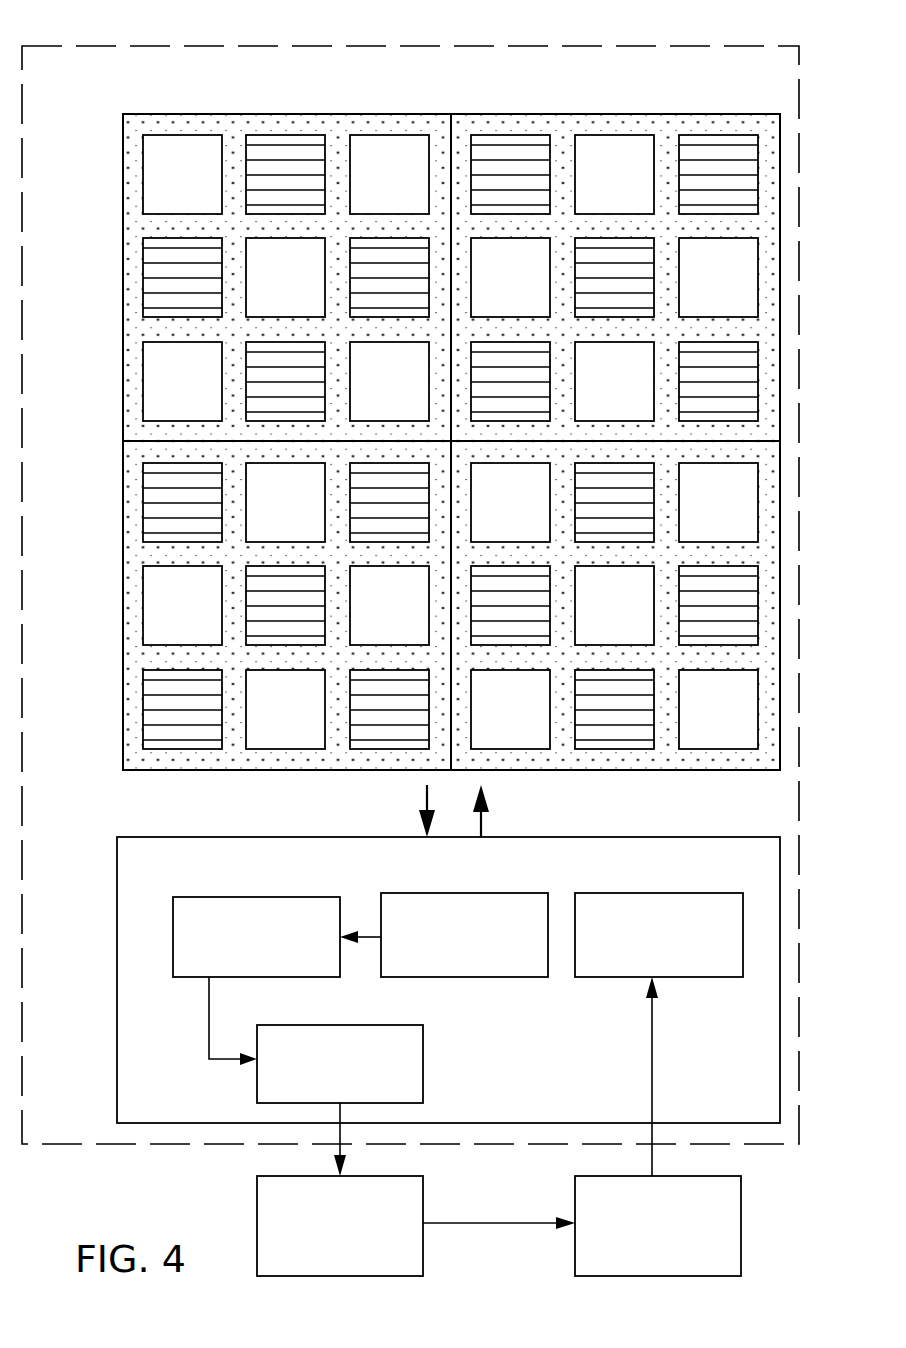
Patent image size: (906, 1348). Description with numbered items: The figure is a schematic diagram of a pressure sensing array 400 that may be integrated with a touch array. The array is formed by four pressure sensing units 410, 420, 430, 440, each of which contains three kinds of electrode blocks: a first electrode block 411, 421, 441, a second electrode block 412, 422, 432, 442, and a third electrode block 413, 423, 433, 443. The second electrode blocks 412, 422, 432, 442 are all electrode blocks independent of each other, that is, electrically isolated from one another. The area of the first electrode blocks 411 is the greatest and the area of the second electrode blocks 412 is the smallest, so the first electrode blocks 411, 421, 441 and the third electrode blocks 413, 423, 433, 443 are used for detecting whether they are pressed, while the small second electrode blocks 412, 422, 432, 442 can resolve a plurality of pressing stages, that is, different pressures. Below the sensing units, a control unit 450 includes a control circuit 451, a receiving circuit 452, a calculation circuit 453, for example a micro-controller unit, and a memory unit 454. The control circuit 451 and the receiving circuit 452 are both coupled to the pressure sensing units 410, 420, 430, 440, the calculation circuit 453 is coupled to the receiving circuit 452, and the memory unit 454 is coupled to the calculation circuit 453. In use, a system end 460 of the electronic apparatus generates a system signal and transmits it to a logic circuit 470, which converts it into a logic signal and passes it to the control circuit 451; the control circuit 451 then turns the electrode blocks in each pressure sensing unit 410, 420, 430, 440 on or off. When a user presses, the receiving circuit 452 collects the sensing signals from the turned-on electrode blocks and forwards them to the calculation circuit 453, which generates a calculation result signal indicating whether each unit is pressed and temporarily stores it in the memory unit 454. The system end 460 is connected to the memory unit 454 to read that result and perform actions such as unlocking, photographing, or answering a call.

The pressure sensing array 400 is at (155, 43).
The pressure sensing unit 410 is at (123, 152).
The first electrode block 411 is at (163, 186).
The second electrode block 412 is at (300, 157).
The third electrode block 413 is at (163, 616).
The pressure sensing unit 420 is at (555, 115).
The first electrode block 421 is at (595, 187).
The second electrode block 422 is at (733, 170).
The third electrode block 423 is at (768, 150).
The pressure sensing unit 430 is at (123, 502).
The second electrode block 432 is at (173, 717).
The third electrode block 433 is at (135, 588).
The pressure sensing unit 440 is at (587, 770).
The first electrode block 441 is at (491, 511).
The second electrode block 442 is at (615, 720).
The third electrode block 443 is at (663, 758).
The control unit 450 is at (528, 1094).
The control circuit 451 is at (640, 964).
The receiving circuit 452 is at (446, 964).
The calculation circuit 453 is at (238, 969).
The memory unit 454 is at (321, 1091).
The system end 460 is at (321, 1254).
The logic circuit 470 is at (639, 1256).